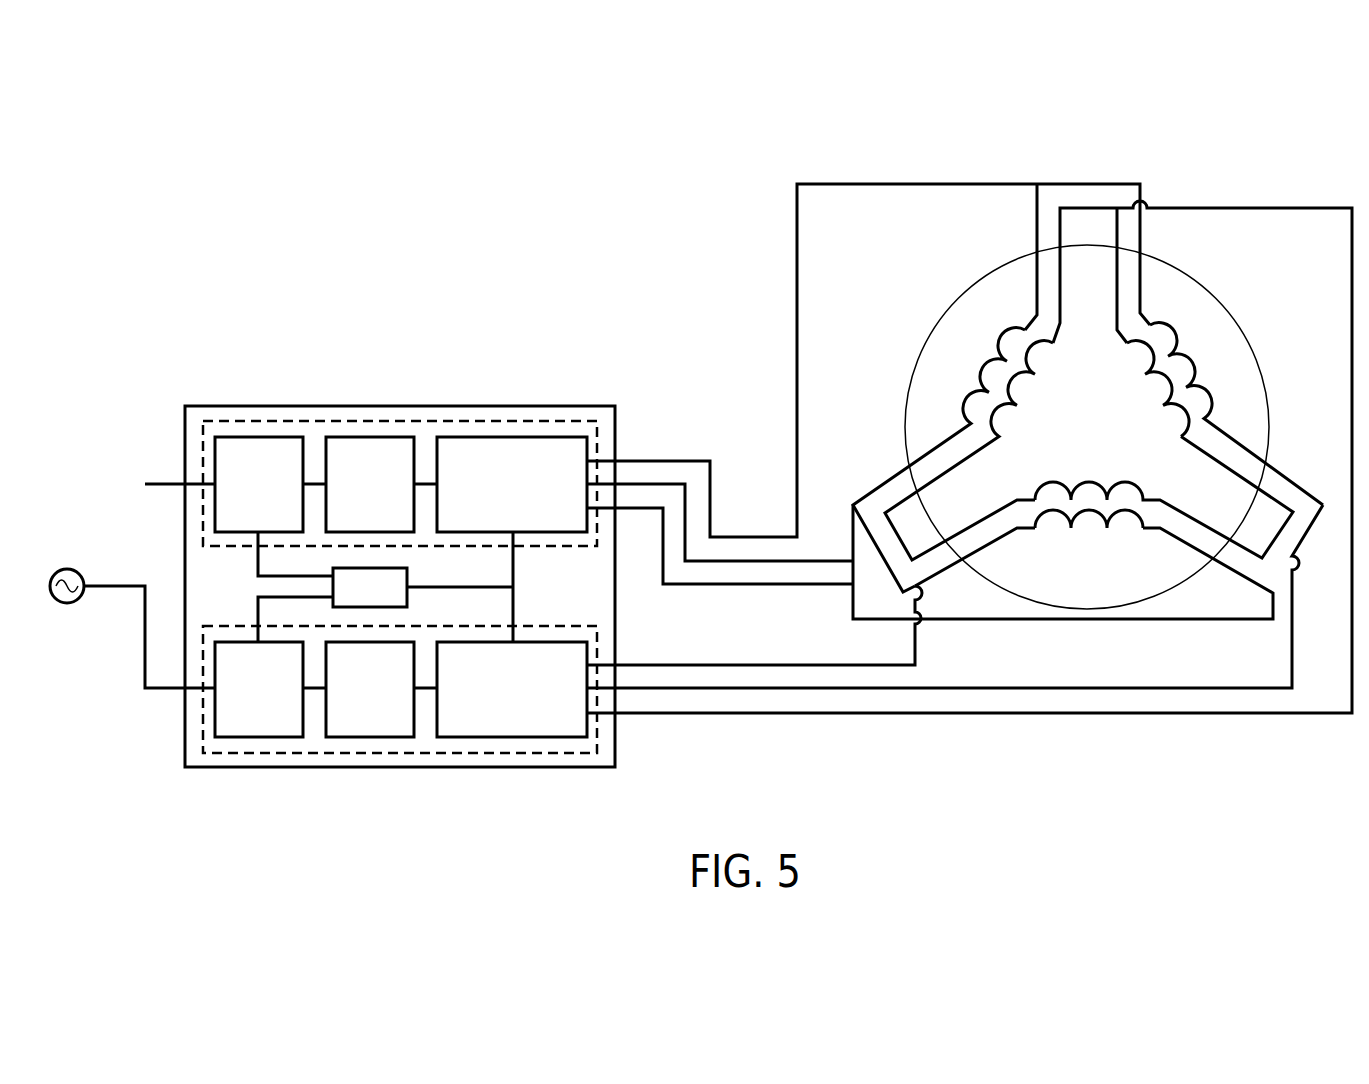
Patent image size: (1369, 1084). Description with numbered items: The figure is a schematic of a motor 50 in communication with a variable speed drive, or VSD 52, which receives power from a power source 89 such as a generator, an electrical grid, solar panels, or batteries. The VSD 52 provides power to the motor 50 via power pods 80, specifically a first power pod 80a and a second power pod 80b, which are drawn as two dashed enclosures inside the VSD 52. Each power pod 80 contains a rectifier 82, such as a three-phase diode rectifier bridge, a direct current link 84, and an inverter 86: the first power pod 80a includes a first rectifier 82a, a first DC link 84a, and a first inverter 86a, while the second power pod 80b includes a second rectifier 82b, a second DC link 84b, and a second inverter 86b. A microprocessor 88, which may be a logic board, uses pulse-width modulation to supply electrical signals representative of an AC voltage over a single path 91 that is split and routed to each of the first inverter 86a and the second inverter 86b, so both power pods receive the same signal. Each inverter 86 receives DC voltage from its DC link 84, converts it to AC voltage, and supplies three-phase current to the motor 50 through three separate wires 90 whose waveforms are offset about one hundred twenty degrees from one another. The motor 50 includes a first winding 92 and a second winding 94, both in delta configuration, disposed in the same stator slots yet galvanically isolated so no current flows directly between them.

The motor 50 is at (1088, 358).
The variable speed drive (VSD) 52 is at (583, 406).
The power pods 80 is at (203, 475).
The first power pod 80a is at (203, 447).
The second power pod 80b is at (203, 727).
The rectifier 82 is at (230, 437).
The first rectifier 82a is at (252, 437).
The second rectifier 82b is at (257, 737).
The direct current (DC) link 84 is at (358, 437).
The first DC link 84a is at (383, 437).
The second DC link 84b is at (385, 737).
The inverter 86 is at (498, 437).
The first inverter 86a is at (520, 437).
The second inverter 86b is at (520, 737).
The microprocessor 88 is at (407, 600).
The power source 89 is at (66, 569).
The wires 90 is at (742, 527).
The single path 91 is at (434, 587).
The first winding 92 is at (1075, 183).
The second winding 94 is at (1098, 206).